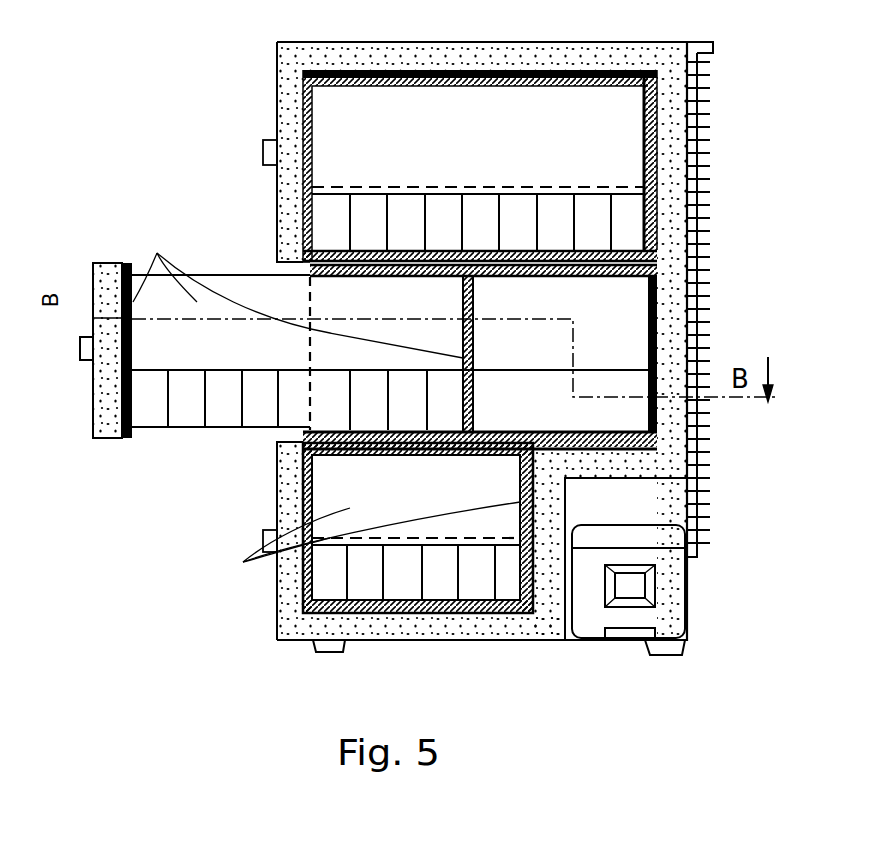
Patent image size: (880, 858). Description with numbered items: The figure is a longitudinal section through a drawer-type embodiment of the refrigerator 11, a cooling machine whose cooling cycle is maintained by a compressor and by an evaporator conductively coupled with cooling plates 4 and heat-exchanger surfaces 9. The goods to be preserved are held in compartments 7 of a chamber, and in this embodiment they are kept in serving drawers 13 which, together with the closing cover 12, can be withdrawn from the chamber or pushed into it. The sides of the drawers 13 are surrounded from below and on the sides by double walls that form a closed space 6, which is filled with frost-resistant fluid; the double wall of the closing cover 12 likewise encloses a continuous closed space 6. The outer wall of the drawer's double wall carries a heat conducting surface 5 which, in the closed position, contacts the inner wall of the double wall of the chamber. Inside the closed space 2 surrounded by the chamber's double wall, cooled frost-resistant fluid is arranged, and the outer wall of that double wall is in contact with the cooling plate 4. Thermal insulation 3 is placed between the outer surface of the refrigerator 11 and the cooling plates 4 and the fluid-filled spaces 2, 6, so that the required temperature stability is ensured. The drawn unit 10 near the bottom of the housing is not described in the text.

The closed space 2 is at (475, 250).
The thermal insulation 3 is at (277, 112).
The cooling plate 4 is at (533, 68).
The heat conducting surface 5 is at (615, 305).
The closed space 6 is at (627, 130).
The compartment 7 is at (385, 232).
The heat-exchanger surface 9 is at (697, 200).
The cooling unit 10 is at (668, 595).
The refrigerator 11 is at (398, 42).
The closing cover 12 is at (277, 493).
The serving drawer 13 is at (408, 208).